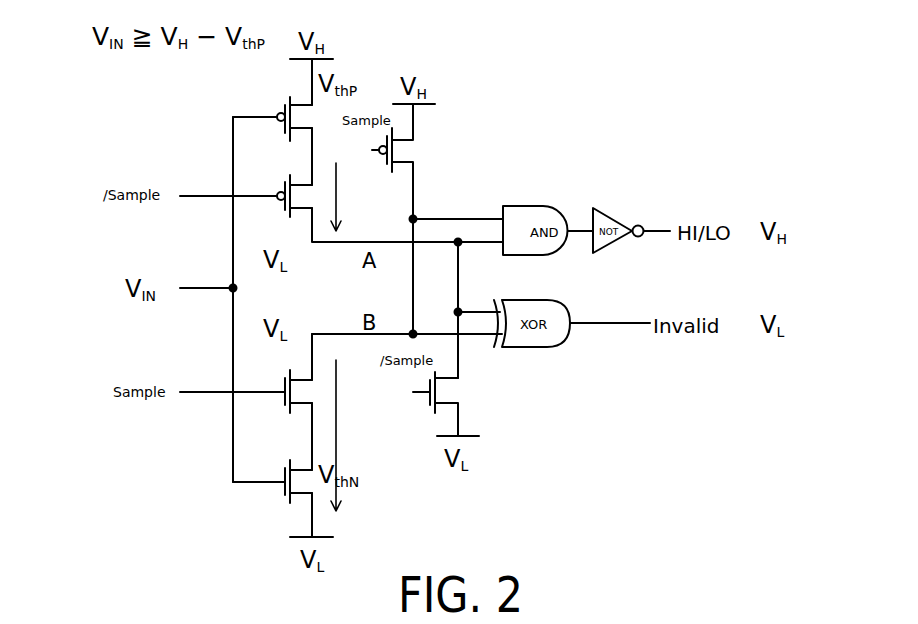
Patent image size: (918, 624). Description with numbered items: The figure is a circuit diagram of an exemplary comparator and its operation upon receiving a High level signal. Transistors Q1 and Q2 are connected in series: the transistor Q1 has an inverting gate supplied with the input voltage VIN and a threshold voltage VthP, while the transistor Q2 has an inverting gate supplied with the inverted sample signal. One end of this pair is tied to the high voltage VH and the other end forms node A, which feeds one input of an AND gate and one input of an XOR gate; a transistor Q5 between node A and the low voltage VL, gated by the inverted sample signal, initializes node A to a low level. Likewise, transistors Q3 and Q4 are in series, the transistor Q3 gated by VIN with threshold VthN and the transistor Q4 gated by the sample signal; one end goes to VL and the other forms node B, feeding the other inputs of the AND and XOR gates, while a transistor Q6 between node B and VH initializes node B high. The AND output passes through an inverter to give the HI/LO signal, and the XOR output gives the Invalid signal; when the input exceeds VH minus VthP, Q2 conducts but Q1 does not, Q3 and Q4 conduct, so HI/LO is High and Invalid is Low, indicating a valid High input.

The transistor Q1 is at (283, 109).
The transistor Q2 is at (286, 188).
The transistor Q3 is at (286, 488).
The transistor Q4 is at (288, 406).
The transistor Q5 is at (448, 383).
The transistor Q6 is at (400, 137).